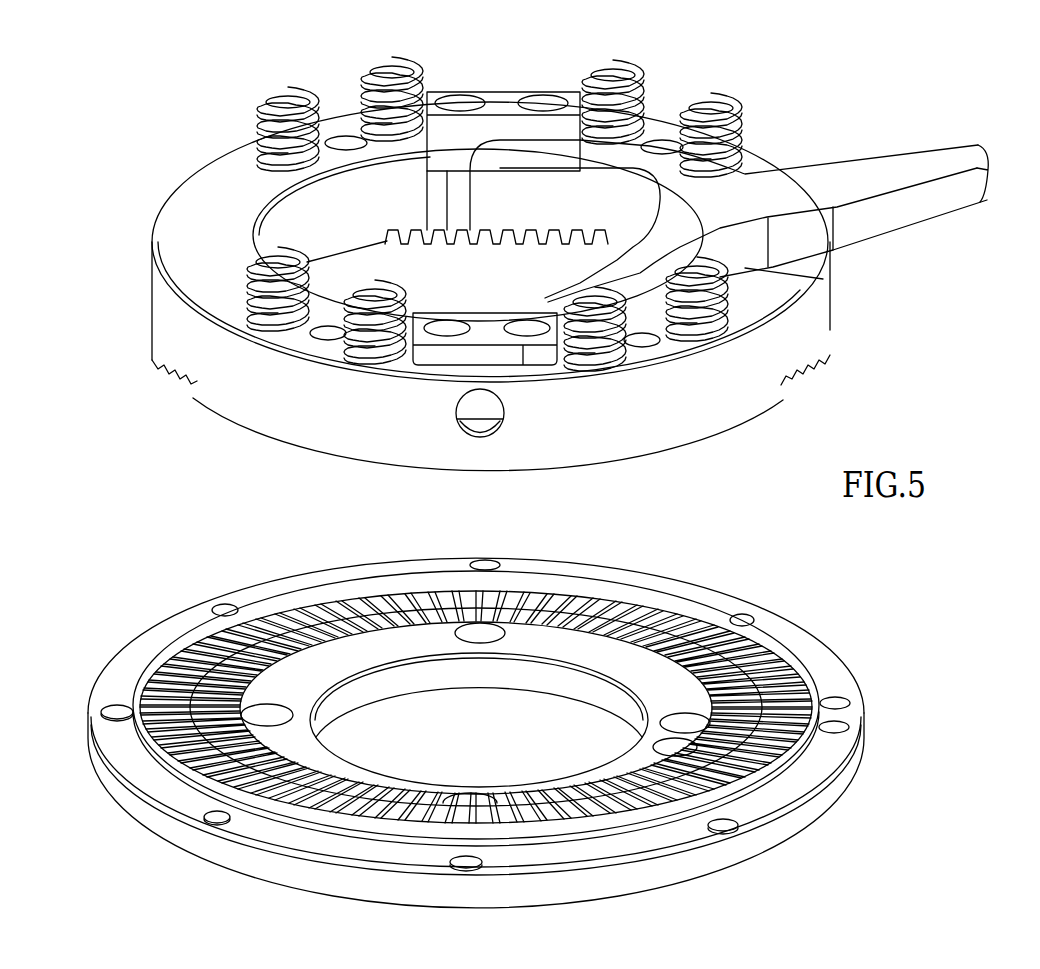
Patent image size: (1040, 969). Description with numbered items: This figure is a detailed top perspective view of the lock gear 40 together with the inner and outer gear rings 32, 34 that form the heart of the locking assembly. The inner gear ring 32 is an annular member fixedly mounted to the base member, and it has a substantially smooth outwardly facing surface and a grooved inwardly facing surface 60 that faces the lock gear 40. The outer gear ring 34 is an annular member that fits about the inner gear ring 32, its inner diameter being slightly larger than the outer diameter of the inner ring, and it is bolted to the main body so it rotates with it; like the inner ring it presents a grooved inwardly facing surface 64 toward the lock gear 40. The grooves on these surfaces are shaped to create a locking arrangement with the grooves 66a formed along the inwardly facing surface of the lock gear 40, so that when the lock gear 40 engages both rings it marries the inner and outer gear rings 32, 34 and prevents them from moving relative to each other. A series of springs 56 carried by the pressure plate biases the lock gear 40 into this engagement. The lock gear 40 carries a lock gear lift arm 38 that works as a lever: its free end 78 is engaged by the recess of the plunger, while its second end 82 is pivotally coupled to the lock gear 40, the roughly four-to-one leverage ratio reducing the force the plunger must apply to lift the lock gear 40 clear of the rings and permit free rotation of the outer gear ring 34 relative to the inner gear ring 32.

The inner gear ring 32 is at (317, 665).
The outer gear ring 34 is at (827, 674).
The lock gear lift arm 38 is at (840, 167).
The lock gear 40 is at (157, 296).
The springs 56 is at (285, 87).
The grooved inwardly facing surface 60 is at (613, 607).
The grooved inwardly facing surface 64 is at (777, 667).
The grooves 66a is at (156, 365).
The free end 78 is at (957, 142).
The second end 82 is at (503, 228).